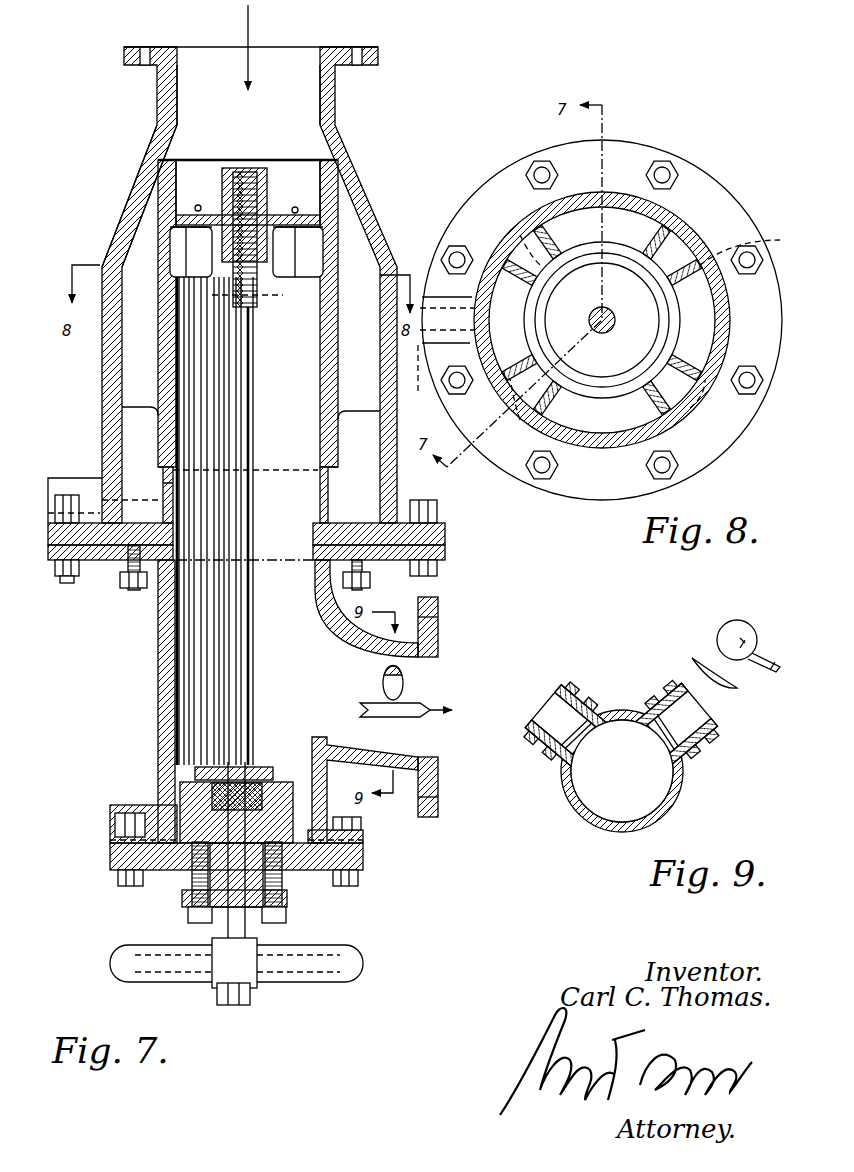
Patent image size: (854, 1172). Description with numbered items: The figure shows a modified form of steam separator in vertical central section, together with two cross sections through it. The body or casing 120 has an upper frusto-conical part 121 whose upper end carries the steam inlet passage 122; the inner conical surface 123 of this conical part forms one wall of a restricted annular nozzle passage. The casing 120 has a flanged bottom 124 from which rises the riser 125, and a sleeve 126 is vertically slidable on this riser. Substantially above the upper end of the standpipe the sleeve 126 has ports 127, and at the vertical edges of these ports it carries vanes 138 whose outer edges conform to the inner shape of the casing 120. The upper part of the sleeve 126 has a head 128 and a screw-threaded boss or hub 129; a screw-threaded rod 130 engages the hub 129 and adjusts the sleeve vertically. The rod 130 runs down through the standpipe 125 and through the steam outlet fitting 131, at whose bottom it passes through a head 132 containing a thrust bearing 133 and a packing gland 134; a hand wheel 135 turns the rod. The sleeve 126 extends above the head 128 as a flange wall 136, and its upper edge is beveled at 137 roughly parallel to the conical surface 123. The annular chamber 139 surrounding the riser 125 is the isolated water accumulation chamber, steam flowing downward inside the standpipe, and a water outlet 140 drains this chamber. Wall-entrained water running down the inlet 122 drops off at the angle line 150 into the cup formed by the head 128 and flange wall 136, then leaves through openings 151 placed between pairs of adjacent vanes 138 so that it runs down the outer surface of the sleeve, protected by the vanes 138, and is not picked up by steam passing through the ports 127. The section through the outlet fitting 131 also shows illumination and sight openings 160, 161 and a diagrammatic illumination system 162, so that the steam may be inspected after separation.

In FIG. 7, the body or casing 120 is at (100, 378).
In FIG. 8, the body or casing 120 is at (690, 252).
In FIG. 7, the upper frusto-conical part 121 is at (138, 172).
In FIG. 7, the steam inlet passage 122 is at (299, 62).
In FIG. 7, the inner conical surface 123 is at (170, 150).
In FIG. 7, the flanged bottom 124 is at (112, 545).
In FIG. 7, the riser 125 is at (165, 485).
In FIG. 8, the riser 125 is at (597, 325).
In FIG. 7, the sleeve 126 is at (329, 466).
In FIG. 8, the sleeve 126 is at (575, 398).
In FIG. 7, the ports 127 is at (175, 240).
In FIG. 8, the ports 127 is at (590, 262).
In FIG. 7, the head 128 is at (268, 214).
In FIG. 7, the screw-threaded boss or hub 129 is at (268, 252).
In FIG. 7, the screw-threaded rod 130 is at (243, 433).
In FIG. 8, the screw-threaded rod 130 is at (603, 330).
In FIG. 7, the steam outlet fitting 131 is at (165, 672).
In FIG. 9, the steam outlet fitting 131 is at (575, 805).
In FIG. 7, the head 132 is at (170, 862).
In FIG. 7, the thrust bearing 133 is at (190, 792).
In FIG. 7, the packing gland 134 is at (298, 874).
In FIG. 7, the hand wheel 135 is at (323, 963).
In FIG. 7, the flange wall 136 is at (170, 182).
In FIG. 7, the beveled upper edge 137 is at (170, 167).
In FIG. 7, the vanes 138 is at (320, 262).
In FIG. 8, the vanes 138 is at (650, 240).
In FIG. 7, the annular chamber 139 is at (133, 447).
In FIG. 7, the water outlet 140 is at (118, 507).
In FIG. 8, the water outlet 140 is at (439, 348).
In FIG. 7, the angle line 150 is at (297, 125).
In FIG. 7, the openings 151 is at (160, 203).
In FIG. 8, the openings 151 is at (626, 320).
In FIG. 7, the illumination opening 160 is at (547, 697).
In FIG. 9, the sight opening 161 is at (700, 707).
In FIG. 9, the illumination system 162 is at (706, 648).